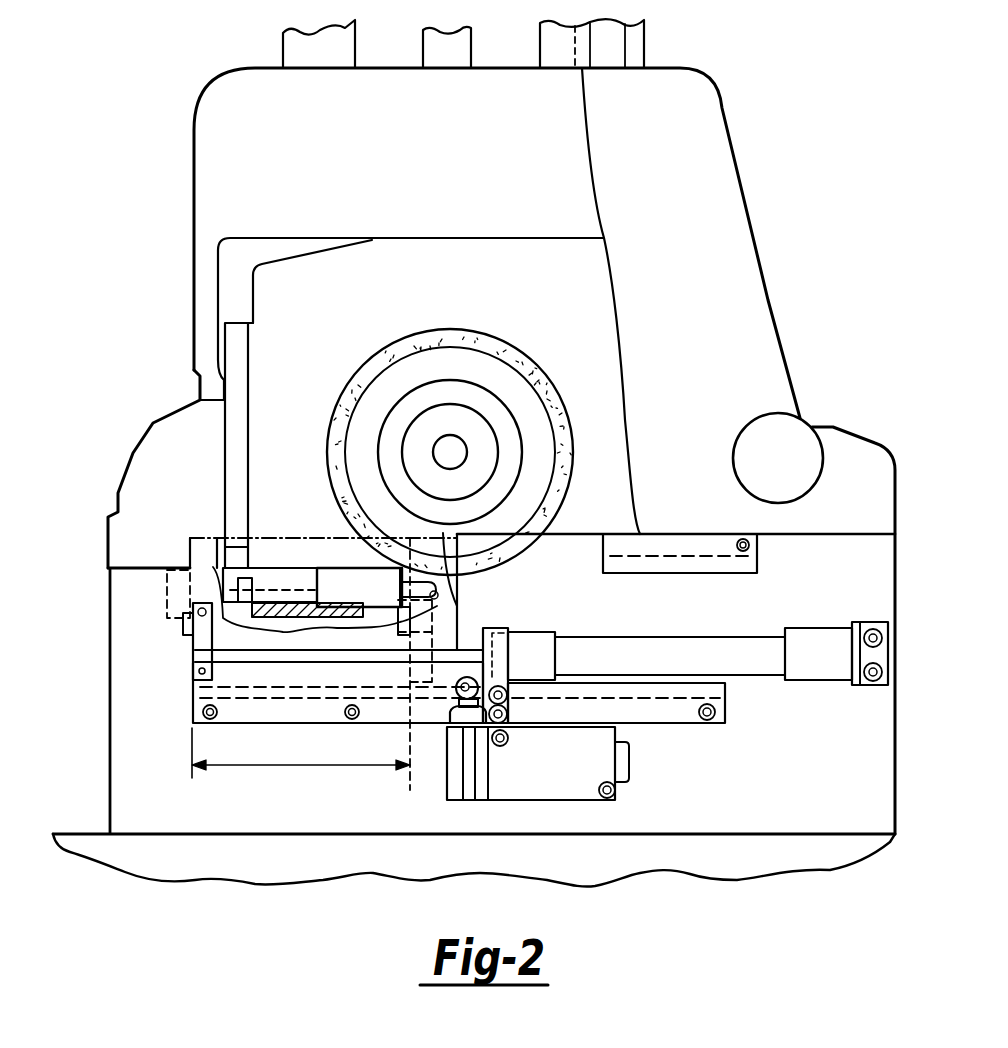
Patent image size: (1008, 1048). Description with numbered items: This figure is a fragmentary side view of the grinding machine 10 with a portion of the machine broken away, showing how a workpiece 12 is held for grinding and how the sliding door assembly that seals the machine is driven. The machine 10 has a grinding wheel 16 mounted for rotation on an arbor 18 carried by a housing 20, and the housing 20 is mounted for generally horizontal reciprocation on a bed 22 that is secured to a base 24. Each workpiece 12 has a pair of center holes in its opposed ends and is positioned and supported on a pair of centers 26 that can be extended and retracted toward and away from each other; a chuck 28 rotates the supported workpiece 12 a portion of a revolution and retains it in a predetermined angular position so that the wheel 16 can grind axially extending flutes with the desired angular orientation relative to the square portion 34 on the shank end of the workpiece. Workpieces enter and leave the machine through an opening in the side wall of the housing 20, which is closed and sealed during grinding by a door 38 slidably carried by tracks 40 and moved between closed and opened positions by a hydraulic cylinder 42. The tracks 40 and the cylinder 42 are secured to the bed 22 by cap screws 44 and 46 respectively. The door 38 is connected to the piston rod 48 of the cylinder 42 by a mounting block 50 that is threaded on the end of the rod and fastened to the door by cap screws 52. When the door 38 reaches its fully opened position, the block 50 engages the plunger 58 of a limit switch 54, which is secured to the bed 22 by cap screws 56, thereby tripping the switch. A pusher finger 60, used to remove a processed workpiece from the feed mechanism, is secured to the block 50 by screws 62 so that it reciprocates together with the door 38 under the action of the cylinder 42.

The grinding machine 10 is at (196, 90).
The workpiece 12 is at (347, 568).
The grinding wheel 16 is at (381, 345).
The arbor 18 is at (455, 443).
The housing 20 is at (194, 163).
The bed 22 is at (108, 710).
The base 24 is at (80, 790).
The centers 26 is at (437, 606).
The chuck 28 is at (205, 570).
The square portion 34 is at (240, 585).
The door 38 is at (200, 590).
The tracks 40 is at (663, 543).
The hydraulic cylinder 42 is at (692, 636).
The cap screws 44 is at (720, 713).
The cap screws 46 is at (873, 630).
The piston rod 48 is at (443, 655).
The mounting block 50 is at (200, 640).
The cap screws 52 is at (200, 672).
The limit switch 54 is at (583, 790).
The cap screws 56 is at (618, 792).
The plunger 58 is at (461, 684).
The pusher finger 60 is at (183, 623).
The screws 62 is at (325, 613).